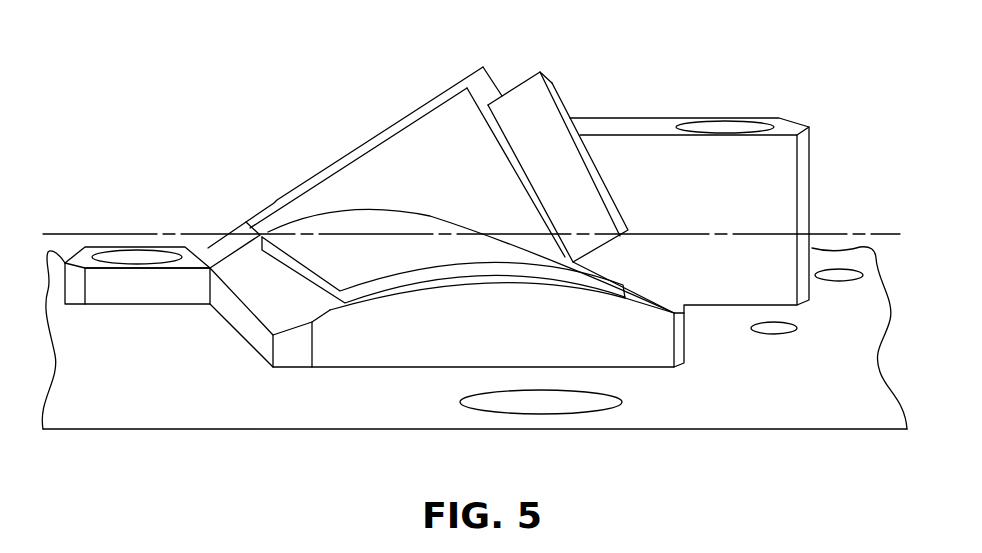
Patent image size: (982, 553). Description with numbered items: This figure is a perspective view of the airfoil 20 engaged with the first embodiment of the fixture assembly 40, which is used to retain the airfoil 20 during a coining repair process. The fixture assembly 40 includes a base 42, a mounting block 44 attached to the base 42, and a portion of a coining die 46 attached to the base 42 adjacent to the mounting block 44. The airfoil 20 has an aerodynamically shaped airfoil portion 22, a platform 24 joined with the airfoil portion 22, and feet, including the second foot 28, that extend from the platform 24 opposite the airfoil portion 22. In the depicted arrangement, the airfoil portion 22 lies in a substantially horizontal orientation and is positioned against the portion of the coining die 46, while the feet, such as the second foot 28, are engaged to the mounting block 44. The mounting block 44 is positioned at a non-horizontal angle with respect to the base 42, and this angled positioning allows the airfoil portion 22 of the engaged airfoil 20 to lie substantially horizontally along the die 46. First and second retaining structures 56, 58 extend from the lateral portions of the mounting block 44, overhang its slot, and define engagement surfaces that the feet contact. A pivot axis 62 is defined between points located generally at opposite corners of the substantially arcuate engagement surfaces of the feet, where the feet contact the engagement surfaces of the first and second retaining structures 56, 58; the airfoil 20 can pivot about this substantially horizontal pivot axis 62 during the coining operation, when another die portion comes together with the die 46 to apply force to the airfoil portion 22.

The airfoil 20 is at (228, 250).
The airfoil portion 22 is at (330, 273).
The platform 24 is at (392, 172).
The second foot 28 is at (483, 80).
The fixture assembly 40 is at (730, 453).
The base 42 is at (173, 395).
The mounting block 44 is at (540, 121).
The coining die 46 is at (380, 342).
The first retaining structure 56 is at (228, 235).
The second retaining structure 58 is at (517, 110).
The pivot axis 62 is at (880, 234).